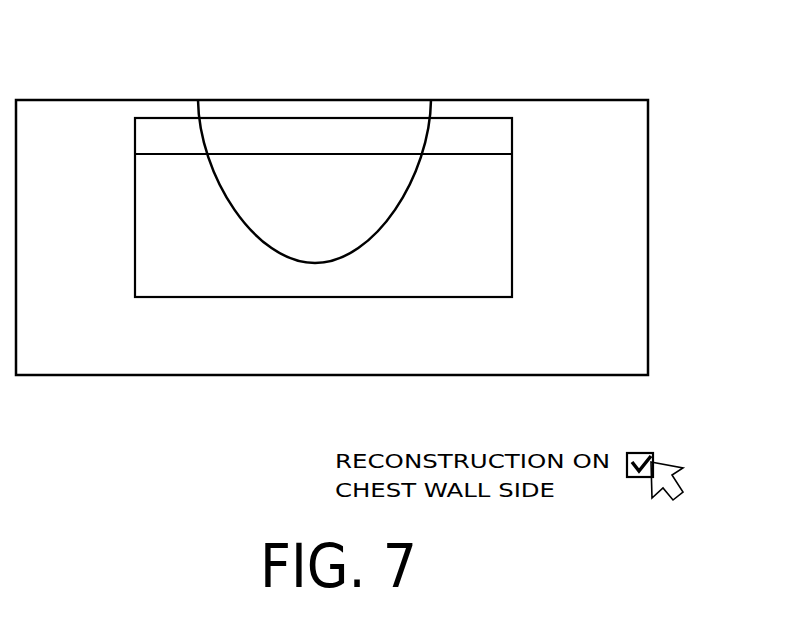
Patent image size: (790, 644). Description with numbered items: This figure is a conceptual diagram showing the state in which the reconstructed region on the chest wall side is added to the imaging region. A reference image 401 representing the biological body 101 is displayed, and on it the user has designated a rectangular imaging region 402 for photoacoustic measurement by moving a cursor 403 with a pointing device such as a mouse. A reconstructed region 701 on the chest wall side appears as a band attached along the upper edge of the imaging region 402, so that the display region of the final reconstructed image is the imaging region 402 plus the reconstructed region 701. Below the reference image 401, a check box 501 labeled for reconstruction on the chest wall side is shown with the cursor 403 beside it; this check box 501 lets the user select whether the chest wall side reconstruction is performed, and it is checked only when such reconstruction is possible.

The biological body 101 is at (403, 110).
The reference image 401 is at (332, 375).
The imaging region 402 is at (133, 235).
The reconstructed region on the chest wall side 701 is at (133, 135).
The check box 501 is at (642, 478).
The cursor 403 is at (687, 493).